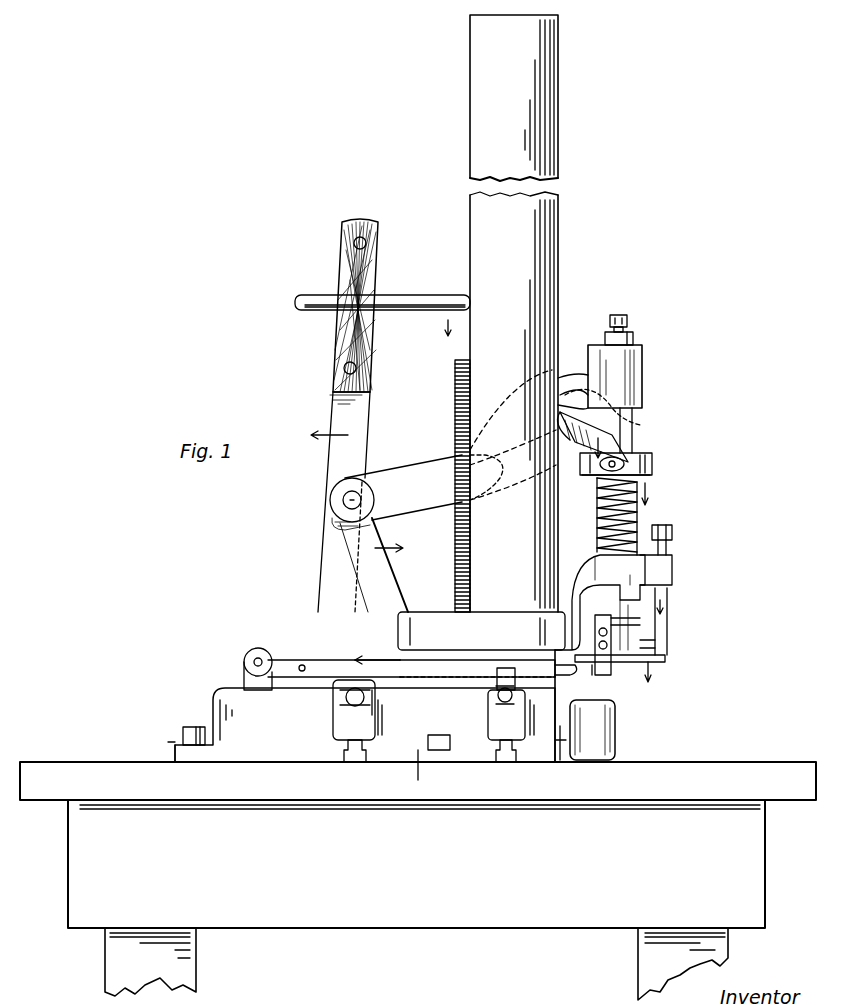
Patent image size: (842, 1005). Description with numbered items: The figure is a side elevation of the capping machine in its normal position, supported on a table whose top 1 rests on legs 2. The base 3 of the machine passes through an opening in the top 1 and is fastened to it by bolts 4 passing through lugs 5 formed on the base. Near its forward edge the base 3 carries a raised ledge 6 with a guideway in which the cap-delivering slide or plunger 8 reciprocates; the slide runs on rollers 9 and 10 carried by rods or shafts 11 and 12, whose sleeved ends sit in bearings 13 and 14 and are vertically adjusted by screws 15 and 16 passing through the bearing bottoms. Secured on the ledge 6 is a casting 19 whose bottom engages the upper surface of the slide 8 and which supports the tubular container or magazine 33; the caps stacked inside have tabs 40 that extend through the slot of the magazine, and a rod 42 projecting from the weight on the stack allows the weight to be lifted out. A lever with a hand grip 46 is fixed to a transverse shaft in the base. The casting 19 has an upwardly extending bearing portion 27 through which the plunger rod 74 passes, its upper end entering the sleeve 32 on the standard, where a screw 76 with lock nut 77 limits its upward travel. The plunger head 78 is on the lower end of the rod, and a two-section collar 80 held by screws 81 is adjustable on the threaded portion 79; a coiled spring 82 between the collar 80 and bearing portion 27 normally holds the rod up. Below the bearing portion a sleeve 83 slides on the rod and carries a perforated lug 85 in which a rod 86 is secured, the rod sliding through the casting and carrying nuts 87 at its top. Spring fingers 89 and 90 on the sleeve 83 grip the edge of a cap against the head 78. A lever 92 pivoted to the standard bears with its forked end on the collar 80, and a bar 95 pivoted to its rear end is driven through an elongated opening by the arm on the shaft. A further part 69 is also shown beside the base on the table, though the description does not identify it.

The table top 1 is at (92, 780).
The legs 2 is at (115, 965).
The base 3 is at (365, 725).
The bolts 4 is at (191, 727).
The lugs 5 is at (168, 742).
The raised ledge 6 is at (555, 672).
The slide or plunger 8 is at (298, 662).
The roller 9 is at (352, 675).
The roller 10 is at (506, 668).
The rod or shaft 11 is at (375, 696).
The rod or shaft 12 is at (498, 692).
The bearing 13 is at (333, 705).
The bearing 14 is at (488, 710).
The adjusting screw 15 is at (354, 764).
The adjusting screw 16 is at (504, 764).
The casting 19 is at (488, 624).
The upwardly extending bearing portion 27 is at (595, 580).
The sleeve 32 is at (642, 383).
The container or magazine 33 is at (553, 197).
The tab or projection 40 is at (466, 548).
The rod 42 is at (416, 302).
The hand grip 46 is at (370, 380).
The box 69 is at (607, 728).
The plunger rod 74 is at (648, 488).
The screw 76 is at (620, 315).
The lock nut 77 is at (635, 338).
The plunger head 78 is at (644, 678).
The threaded portion 79 is at (618, 440).
The collar 80 is at (652, 460).
The screws 81 is at (592, 478).
The coiled spring 82 is at (640, 522).
The sleeve 83 is at (612, 620).
The perforated lug or projection 85 is at (673, 578).
The rod 86 is at (668, 550).
The nuts 87 is at (673, 532).
The spring finger 89 is at (655, 665).
The spring fingers 90 is at (598, 672).
The lever 92 is at (410, 470).
The bar 95 is at (390, 575).